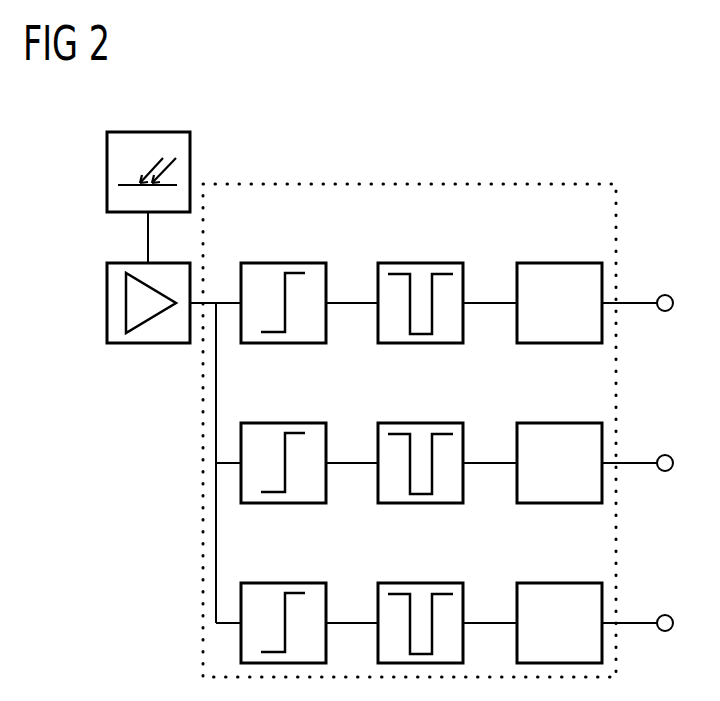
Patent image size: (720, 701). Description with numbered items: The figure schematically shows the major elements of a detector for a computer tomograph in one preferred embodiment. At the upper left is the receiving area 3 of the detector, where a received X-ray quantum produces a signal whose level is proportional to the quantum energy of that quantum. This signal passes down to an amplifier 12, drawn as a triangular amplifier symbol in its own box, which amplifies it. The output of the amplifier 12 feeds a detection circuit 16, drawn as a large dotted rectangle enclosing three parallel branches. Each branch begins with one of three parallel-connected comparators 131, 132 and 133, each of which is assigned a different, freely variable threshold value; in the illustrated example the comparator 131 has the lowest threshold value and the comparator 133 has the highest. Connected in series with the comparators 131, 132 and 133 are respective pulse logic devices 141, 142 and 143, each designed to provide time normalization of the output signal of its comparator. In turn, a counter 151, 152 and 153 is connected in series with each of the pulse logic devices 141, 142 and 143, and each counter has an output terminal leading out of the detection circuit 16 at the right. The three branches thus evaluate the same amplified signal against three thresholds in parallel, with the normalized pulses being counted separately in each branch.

The receiving area 3 is at (106, 185).
The amplifier 12 is at (106, 312).
The detection circuit 16 is at (617, 216).
The comparator 131 is at (283, 262).
The comparator 132 is at (283, 422).
The comparator 133 is at (283, 582).
The pulse logic device 141 is at (420, 262).
The pulse logic device 142 is at (420, 422).
The pulse logic device 143 is at (420, 582).
The counter 151 is at (559, 262).
The counter 152 is at (559, 422).
The counter 153 is at (559, 582).